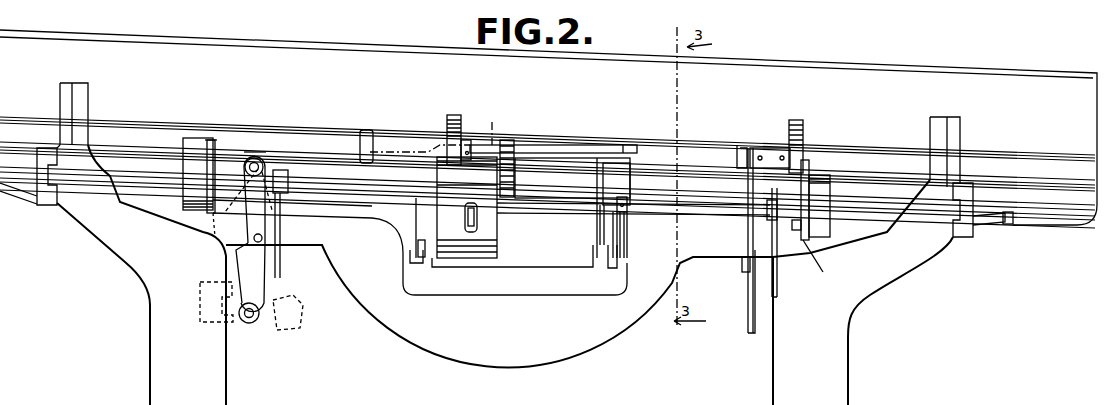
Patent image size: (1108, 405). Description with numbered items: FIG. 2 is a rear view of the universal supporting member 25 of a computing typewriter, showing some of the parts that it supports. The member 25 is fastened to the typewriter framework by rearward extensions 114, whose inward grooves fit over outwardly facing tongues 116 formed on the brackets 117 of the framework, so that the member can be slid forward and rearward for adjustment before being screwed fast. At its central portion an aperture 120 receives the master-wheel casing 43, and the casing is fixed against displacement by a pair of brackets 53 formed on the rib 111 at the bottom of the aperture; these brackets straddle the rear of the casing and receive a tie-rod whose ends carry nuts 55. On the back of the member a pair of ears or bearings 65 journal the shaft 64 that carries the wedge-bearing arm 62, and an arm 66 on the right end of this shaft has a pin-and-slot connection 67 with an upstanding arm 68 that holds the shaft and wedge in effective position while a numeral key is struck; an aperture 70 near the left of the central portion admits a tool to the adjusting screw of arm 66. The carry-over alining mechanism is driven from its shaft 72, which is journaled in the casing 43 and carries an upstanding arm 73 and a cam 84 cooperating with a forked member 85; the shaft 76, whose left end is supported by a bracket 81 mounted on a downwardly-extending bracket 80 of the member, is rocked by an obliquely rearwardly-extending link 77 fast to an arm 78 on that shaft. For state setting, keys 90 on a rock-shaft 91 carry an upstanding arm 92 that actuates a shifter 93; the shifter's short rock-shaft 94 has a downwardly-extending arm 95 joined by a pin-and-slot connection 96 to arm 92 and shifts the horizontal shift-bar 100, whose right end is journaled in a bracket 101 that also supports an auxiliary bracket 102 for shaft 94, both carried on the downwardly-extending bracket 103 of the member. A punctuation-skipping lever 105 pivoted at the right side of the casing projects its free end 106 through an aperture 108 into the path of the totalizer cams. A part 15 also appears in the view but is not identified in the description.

The universal supporting member 25 is at (289, 35).
The brackets of the typewriter framework 117 is at (88, 103).
The tongues 116 is at (57, 178).
The rearward extensions 114 is at (47, 207).
The downwardly-extending bracket 103 is at (183, 184).
The bracket 101 is at (210, 176).
The auxiliary bracket 102 is at (226, 227).
The short rock-shaft 94 is at (258, 160).
The shifter 93 is at (258, 144).
The downwardly-extending arm 95 is at (248, 200).
The pin-and-slot connection 96 is at (254, 242).
The upstanding arm 92 is at (250, 277).
The rock-shaft 91 is at (250, 323).
The keys 90 is at (296, 298).
The shift-bar 100 is at (336, 195).
The aperture 108 is at (370, 130).
The lever 105 is at (388, 150).
The ears or bearings 65 is at (462, 123).
The free end of lever 106 is at (494, 138).
The aperture 120 is at (557, 144).
The wedge-bearing arm 62 is at (494, 168).
The shaft 64 is at (573, 158).
The nuts 55 is at (422, 240).
The shaft 76 is at (558, 214).
The forked member 85 is at (610, 197).
The cam 84 is at (600, 222).
The upstanding arm 73 is at (627, 220).
The shaft 72 is at (630, 226).
The lever 15 is at (630, 240).
The brackets 53 is at (410, 257).
The rib 111 is at (467, 295).
The master-wheel casing 43 is at (513, 267).
The aperture 70 is at (745, 148).
The arm 66 is at (748, 243).
The pin-and-slot connection 67 is at (742, 270).
The upstanding arm 68 is at (748, 315).
The link 77 is at (777, 245).
The arm 78 is at (803, 204).
The downwardly-extending bracket 80 is at (830, 212).
The bracket 81 is at (816, 259).